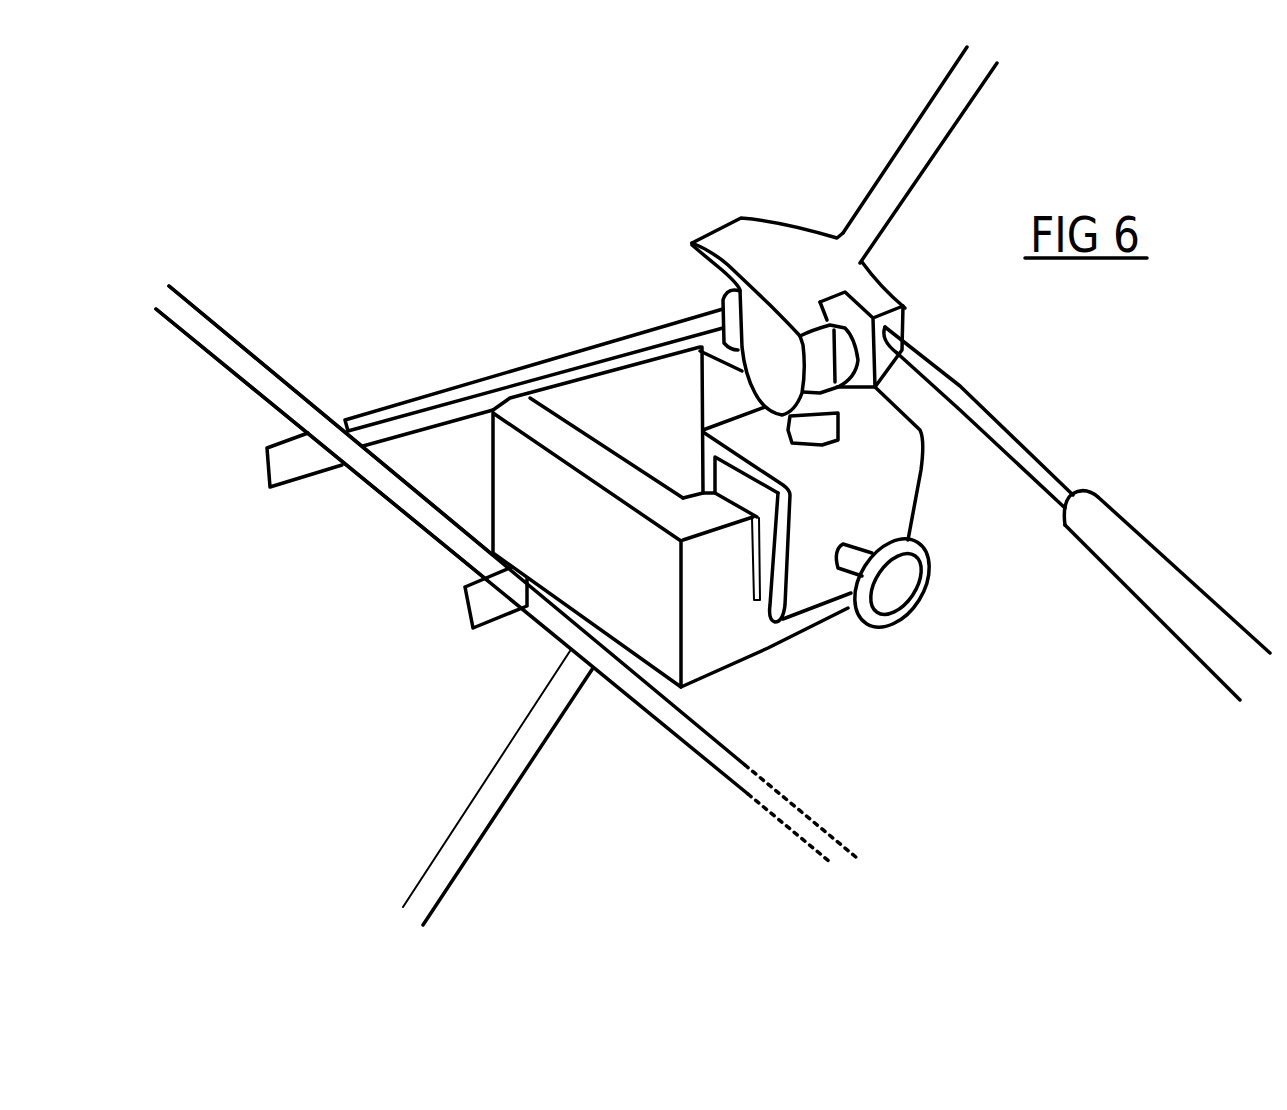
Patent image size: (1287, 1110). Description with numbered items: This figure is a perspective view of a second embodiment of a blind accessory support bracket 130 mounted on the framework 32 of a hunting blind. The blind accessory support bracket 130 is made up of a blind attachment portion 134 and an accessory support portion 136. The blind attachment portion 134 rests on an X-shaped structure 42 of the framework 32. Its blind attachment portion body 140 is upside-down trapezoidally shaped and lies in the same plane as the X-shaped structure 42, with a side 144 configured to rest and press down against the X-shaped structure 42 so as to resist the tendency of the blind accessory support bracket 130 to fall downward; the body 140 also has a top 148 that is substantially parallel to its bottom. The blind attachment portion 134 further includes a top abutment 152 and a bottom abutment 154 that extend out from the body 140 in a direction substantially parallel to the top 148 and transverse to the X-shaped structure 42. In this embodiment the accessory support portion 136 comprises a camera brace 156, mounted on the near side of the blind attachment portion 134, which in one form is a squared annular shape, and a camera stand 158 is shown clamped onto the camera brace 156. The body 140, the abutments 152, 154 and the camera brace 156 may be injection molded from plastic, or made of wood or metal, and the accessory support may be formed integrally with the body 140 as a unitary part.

The framework 32 is at (602, 703).
The X-shaped structure 42 is at (672, 720).
The blind accessory support bracket 130 is at (539, 338).
The blind attachment portion 134 is at (457, 443).
The accessory support portion 136 is at (580, 411).
The blind attachment portion body 140 is at (404, 446).
The side 144 is at (417, 498).
The top 148 is at (621, 337).
The top abutment 152 is at (278, 464).
The bottom abutment 154 is at (468, 606).
The camera brace 156 is at (638, 533).
The camera stand 158 is at (900, 483).